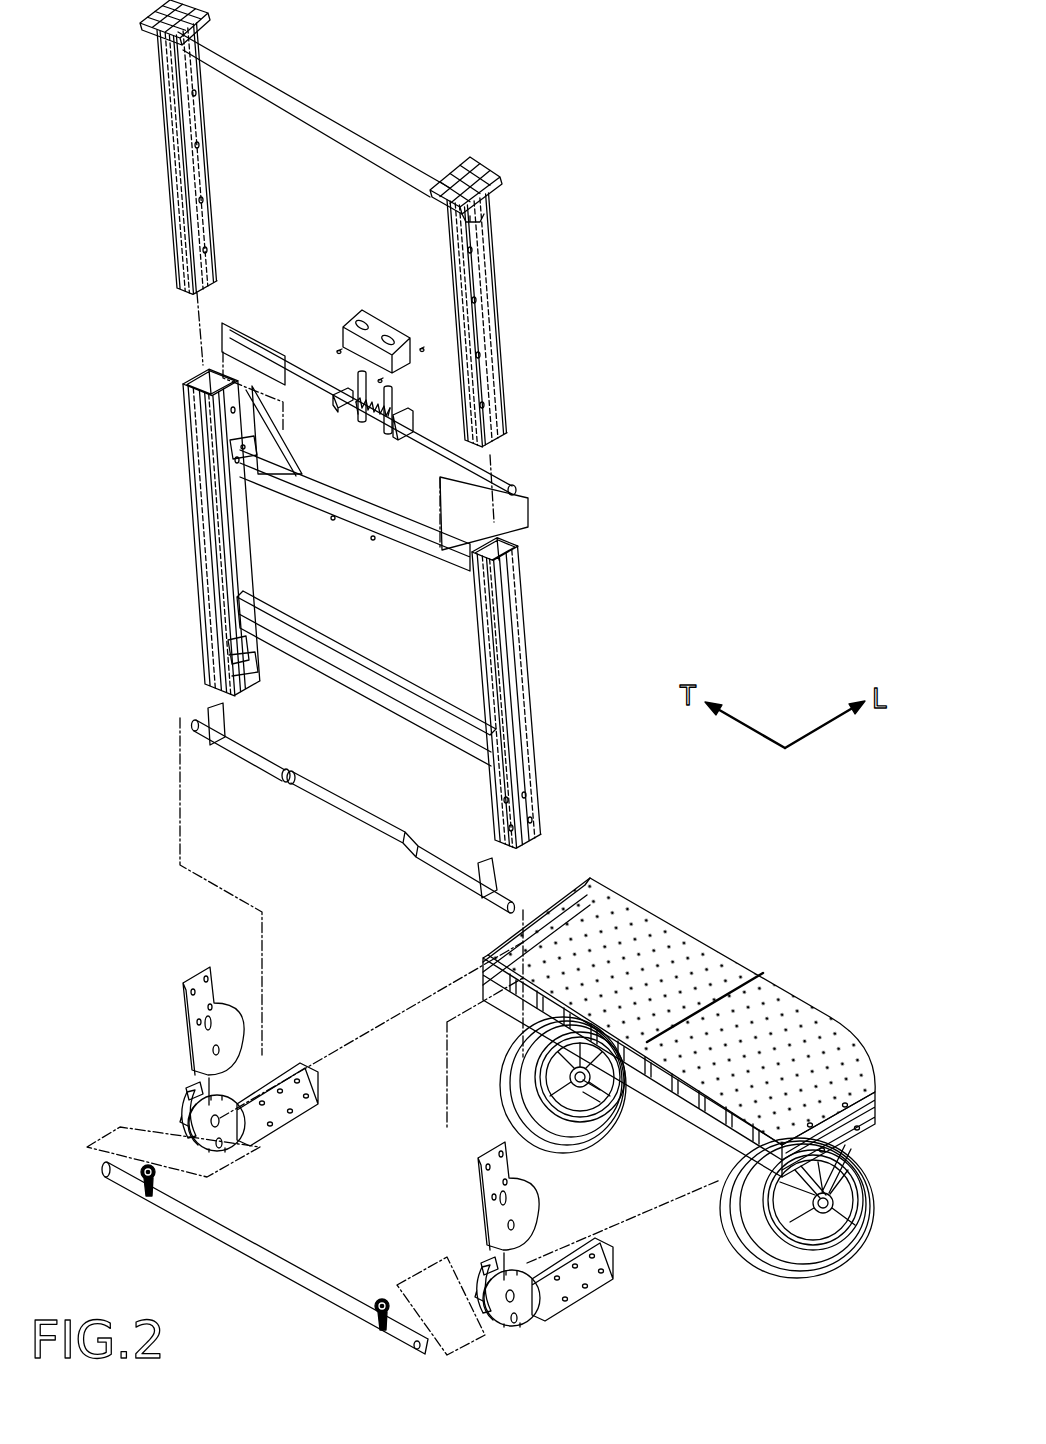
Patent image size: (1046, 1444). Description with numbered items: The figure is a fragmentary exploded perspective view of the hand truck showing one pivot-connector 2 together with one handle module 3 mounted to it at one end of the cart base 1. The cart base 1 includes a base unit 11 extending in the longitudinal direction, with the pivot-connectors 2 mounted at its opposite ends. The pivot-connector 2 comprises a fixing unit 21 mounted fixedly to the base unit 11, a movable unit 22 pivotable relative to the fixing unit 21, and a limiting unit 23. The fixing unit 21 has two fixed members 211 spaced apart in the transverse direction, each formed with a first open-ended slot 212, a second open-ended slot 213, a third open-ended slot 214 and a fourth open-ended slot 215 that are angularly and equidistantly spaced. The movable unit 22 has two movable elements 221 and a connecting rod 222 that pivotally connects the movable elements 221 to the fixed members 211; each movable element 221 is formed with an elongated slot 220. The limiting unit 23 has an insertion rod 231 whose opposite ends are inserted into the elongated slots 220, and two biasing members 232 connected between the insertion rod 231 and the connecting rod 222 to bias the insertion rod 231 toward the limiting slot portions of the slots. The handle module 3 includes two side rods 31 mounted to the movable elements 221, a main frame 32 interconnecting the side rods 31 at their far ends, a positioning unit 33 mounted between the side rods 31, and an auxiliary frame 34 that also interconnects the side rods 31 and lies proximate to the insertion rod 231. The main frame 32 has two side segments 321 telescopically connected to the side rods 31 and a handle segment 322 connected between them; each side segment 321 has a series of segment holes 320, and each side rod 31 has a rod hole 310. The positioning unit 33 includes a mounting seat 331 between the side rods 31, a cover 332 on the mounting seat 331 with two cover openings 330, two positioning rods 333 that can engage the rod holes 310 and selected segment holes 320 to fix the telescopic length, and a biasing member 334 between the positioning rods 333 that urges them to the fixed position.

The cart base 1 is at (756, 952).
The base unit 11 is at (822, 1062).
The pivot-connector 2 is at (130, 1040).
The fixing unit 21 is at (606, 1290).
The movable unit 22 is at (170, 1004).
The limiting unit 23 is at (157, 738).
The handle module 3 is at (152, 345).
The side rod 31 is at (194, 512).
The main frame 32 is at (385, 122).
The positioning unit 33 is at (545, 489).
The auxiliary frame 34 is at (460, 745).
The fixed member 211 is at (190, 1103).
The first open-ended slot 212 is at (256, 1107).
The second open-ended slot 213 is at (194, 1088).
The third open-ended slot 214 is at (176, 1124).
The fourth open-ended slot 215 is at (222, 1148).
The elongated slot 220 is at (212, 1022).
The movable element 221 is at (194, 968).
The connecting rod 222 is at (258, 1250).
The insertion rod 231 is at (248, 755).
The biasing member 232 is at (142, 1180).
The rod hole 310 is at (230, 440).
The segment hole 320 is at (205, 248).
The side segment 321 is at (160, 128).
The handle segment 322 is at (310, 100).
The cover opening 330 is at (343, 328).
The mounting seat 331 is at (440, 622).
The cover 332 is at (382, 326).
The positioning rod 333 is at (244, 330).
The biasing member 334 is at (380, 425).